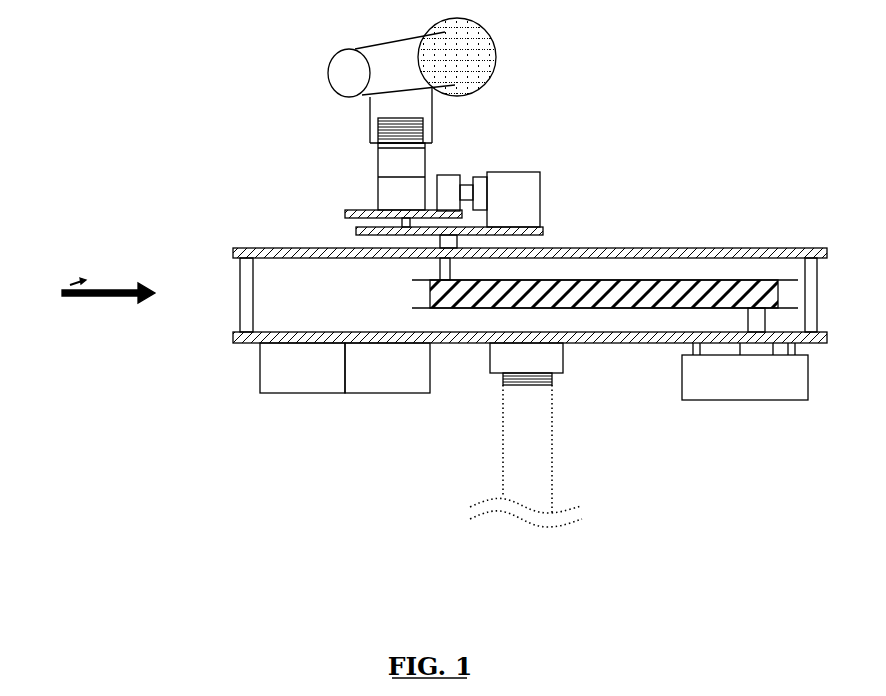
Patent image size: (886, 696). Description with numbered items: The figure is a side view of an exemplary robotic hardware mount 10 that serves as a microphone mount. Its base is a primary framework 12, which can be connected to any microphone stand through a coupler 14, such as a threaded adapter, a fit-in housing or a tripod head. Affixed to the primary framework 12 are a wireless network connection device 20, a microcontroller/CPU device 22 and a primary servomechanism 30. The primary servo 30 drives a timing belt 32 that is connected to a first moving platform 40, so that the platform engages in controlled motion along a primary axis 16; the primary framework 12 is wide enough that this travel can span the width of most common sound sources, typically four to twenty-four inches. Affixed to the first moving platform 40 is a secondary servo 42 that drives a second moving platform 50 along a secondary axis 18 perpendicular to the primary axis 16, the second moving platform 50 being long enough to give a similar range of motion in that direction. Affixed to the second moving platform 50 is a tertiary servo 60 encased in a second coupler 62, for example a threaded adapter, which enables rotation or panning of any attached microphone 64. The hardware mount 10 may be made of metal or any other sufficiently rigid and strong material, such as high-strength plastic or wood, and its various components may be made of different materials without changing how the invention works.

The hardware mount 10 is at (208, 178).
The primary framework 12 is at (235, 337).
The coupler 14 is at (563, 358).
The primary axis 16 is at (107, 295).
The secondary axis 18 is at (70, 283).
The wireless network connection device 20 is at (317, 393).
The microcontroller/CPU device 22 is at (387, 393).
The primary servomechanism 30 is at (758, 400).
The timing belt 32 is at (662, 280).
The first moving platform 40 is at (543, 228).
The secondary servo 42 is at (540, 195).
The second moving platform 50 is at (345, 213).
The tertiary servo 60 is at (378, 190).
The second coupler 62 is at (423, 140).
The microphone 64 is at (365, 43).